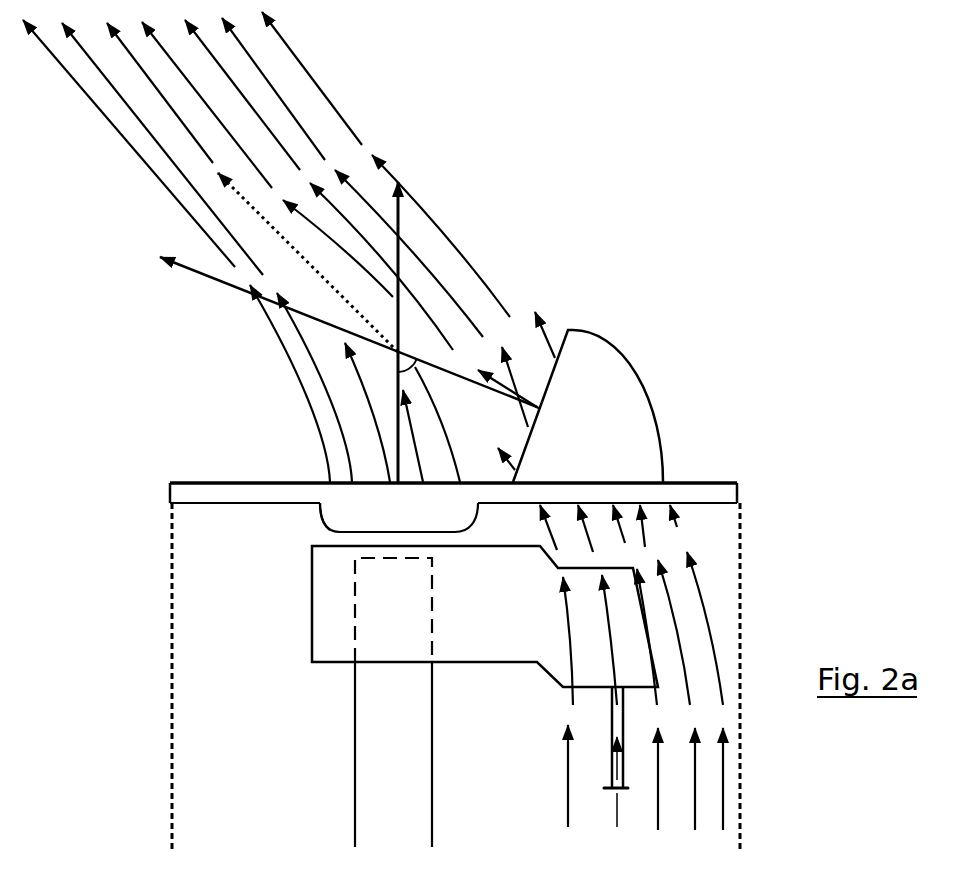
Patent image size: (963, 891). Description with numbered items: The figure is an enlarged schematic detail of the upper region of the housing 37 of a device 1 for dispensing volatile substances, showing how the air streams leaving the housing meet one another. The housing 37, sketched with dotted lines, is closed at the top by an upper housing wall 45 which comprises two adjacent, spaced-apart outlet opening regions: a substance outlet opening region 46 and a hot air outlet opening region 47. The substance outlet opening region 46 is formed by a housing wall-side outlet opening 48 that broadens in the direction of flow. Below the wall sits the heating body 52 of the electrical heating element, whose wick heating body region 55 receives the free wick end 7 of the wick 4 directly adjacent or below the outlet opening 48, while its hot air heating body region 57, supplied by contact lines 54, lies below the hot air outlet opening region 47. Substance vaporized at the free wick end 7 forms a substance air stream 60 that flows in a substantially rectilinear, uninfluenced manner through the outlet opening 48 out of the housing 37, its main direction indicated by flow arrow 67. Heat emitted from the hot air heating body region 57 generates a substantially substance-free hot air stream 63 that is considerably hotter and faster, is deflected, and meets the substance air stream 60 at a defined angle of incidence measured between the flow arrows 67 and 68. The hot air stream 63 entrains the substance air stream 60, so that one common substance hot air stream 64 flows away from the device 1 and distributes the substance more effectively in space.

The device 1 is at (623, 235).
The wick 4 is at (373, 807).
The free wick end 7 is at (393, 732).
The housing 37 is at (165, 640).
The upper housing wall 45 is at (203, 488).
The substance outlet opening region 46 is at (320, 520).
The hot air outlet opening region 47 is at (605, 367).
The outlet opening 48 is at (317, 497).
The heating body 52 is at (310, 660).
The contact lines 54 is at (625, 770).
The wick heating body region 55 is at (330, 603).
The hot air heating body region 57 is at (595, 637).
The substance air stream 60 is at (330, 407).
The hot air stream 63 is at (500, 303).
The common substance hot air stream 64 is at (200, 168).
The flow arrow 67 is at (407, 212).
The flow arrow 68 is at (205, 283).